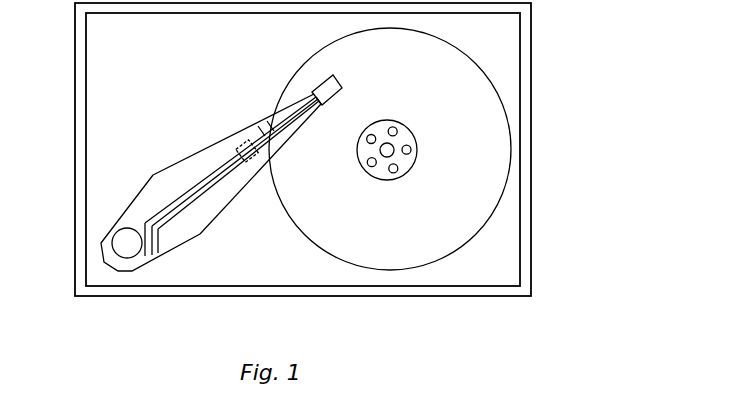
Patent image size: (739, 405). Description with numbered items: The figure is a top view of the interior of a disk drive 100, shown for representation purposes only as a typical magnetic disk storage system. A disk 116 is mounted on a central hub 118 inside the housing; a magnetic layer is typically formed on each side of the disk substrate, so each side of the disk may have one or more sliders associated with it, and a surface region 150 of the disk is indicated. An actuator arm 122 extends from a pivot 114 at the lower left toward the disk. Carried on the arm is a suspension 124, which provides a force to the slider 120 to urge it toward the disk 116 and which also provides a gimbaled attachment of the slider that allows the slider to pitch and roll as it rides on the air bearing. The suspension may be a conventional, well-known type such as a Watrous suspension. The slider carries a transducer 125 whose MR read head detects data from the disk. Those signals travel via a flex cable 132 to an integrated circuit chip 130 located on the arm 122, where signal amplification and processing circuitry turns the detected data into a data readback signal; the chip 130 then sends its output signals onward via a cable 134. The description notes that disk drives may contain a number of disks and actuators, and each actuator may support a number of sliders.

The disk drive 100 is at (532, 72).
The pivot bearing 114 is at (113, 240).
The disk 116 is at (502, 196).
The spindle hub 118 is at (415, 135).
The slider 120 is at (317, 88).
The arm 122 is at (125, 213).
The suspension 124 is at (276, 148).
The transducer 125 is at (314, 105).
The integrated circuit chip 130 is at (240, 141).
The flex cable 132 is at (270, 121).
The cable 134 is at (169, 220).
The disc surface 150 is at (432, 67).